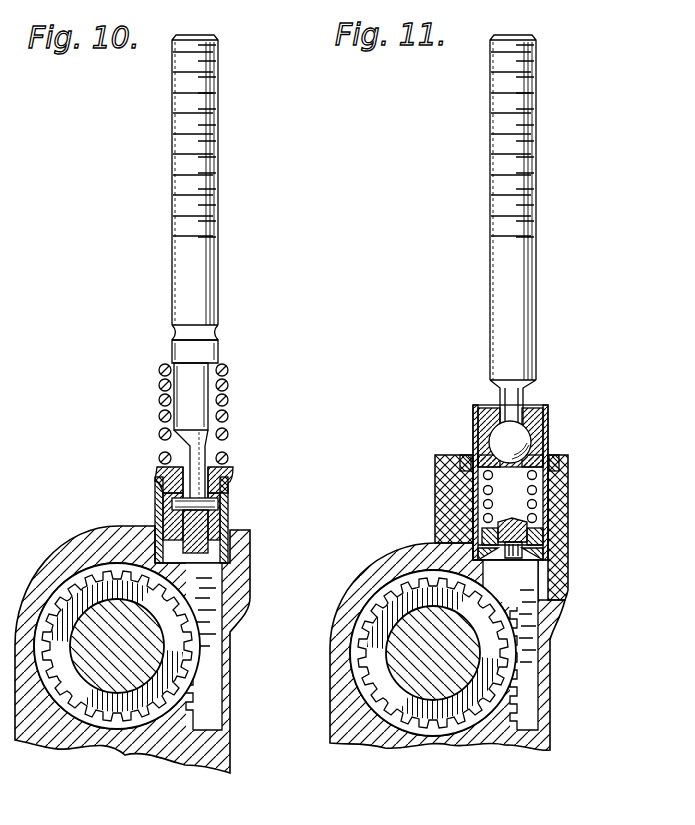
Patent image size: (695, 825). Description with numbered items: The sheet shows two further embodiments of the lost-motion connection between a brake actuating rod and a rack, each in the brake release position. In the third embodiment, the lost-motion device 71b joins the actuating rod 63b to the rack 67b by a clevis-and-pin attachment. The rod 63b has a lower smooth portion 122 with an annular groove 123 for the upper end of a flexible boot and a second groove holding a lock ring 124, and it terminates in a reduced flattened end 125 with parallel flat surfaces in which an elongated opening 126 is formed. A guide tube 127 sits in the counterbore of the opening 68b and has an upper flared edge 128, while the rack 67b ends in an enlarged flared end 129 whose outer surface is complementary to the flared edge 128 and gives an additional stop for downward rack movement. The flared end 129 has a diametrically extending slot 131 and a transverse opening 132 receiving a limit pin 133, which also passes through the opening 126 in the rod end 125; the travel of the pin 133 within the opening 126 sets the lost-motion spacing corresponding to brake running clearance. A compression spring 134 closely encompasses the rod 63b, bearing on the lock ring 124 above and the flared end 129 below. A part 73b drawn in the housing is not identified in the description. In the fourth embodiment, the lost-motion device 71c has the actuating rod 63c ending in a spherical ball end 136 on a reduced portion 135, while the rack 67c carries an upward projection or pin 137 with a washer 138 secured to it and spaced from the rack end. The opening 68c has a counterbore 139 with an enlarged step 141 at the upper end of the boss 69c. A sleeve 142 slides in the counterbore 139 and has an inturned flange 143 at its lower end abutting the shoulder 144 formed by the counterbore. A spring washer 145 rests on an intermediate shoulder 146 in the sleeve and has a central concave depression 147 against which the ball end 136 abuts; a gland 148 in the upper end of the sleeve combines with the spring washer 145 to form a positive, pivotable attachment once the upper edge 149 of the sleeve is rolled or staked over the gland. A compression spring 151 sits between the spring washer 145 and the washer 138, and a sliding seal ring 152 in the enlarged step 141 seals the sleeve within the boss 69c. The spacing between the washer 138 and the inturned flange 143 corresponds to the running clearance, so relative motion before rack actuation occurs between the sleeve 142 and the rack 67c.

In FIG. 10, the actuating rod 63b is at (233, 160).
In FIG. 10, the lower smooth portion 122 is at (219, 282).
In FIG. 10, the annular groove 123 is at (172, 318).
In FIG. 10, the lock ring 124 is at (223, 366).
In FIG. 10, the reduced flattened end 125 is at (211, 460).
In FIG. 10, the compression spring 134 is at (160, 395).
In FIG. 10, the lost-motion device 71b is at (248, 409).
In FIG. 10, the enlarged flared end 129 is at (157, 478).
In FIG. 10, the limit pin 133 is at (157, 487).
In FIG. 10, the upper flared edge 128 is at (234, 487).
In FIG. 10, the transverse opening 132 is at (162, 501).
In FIG. 10, the elongated opening 126 is at (224, 509).
In FIG. 10, the diametrically extending slot 131 is at (158, 522).
In FIG. 10, the guide tube 127 is at (229, 521).
In FIG. 10, the gear 73b is at (92, 596).
In FIG. 10, the opening 68b is at (248, 601).
In FIG. 10, the rack 67b is at (212, 665).
In FIG. 11, the actuating rod 63c is at (550, 178).
In FIG. 11, the lost-motion device 71c is at (550, 356).
In FIG. 11, the reduced portion 135 is at (519, 398).
In FIG. 11, the upper edge 149 is at (478, 425).
In FIG. 11, the gland 148 is at (478, 418).
In FIG. 11, the spherical ball end 136 is at (546, 429).
In FIG. 11, the intermediate shoulder 146 is at (534, 449).
In FIG. 11, the enlarged step 141 is at (464, 456).
In FIG. 11, the boss 69c is at (442, 470).
In FIG. 11, the sliding seal ring 152 is at (560, 461).
In FIG. 11, the spring washer 145 is at (484, 485).
In FIG. 11, the sleeve 142 is at (548, 492).
In FIG. 11, the compression spring 151 is at (484, 504).
In FIG. 11, the central concave depression 147 is at (537, 522).
In FIG. 11, the counterbore 139 is at (486, 535).
In FIG. 11, the washer 138 is at (544, 544).
In FIG. 11, the shoulder 144 is at (478, 550).
In FIG. 11, the inturned flange 143 is at (566, 590).
In FIG. 11, the upward projection or pin 137 is at (553, 620).
In FIG. 11, the rack 67c is at (536, 661).
In FIG. 11, the opening 68c is at (540, 706).